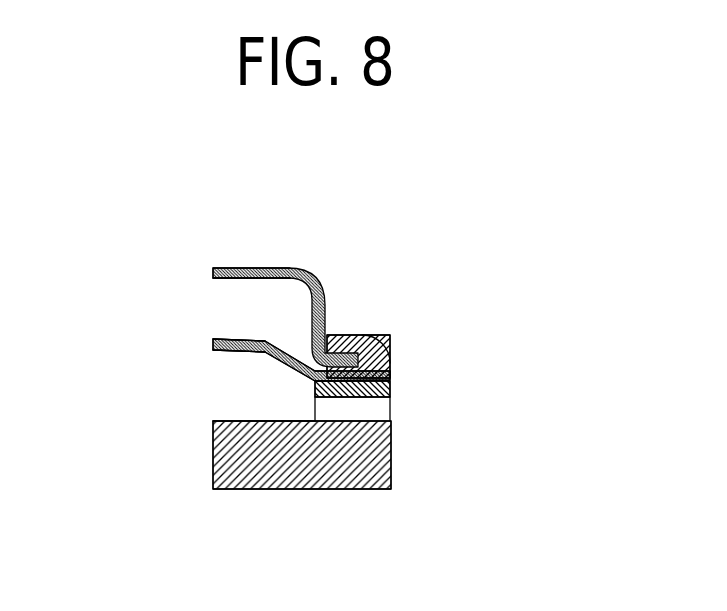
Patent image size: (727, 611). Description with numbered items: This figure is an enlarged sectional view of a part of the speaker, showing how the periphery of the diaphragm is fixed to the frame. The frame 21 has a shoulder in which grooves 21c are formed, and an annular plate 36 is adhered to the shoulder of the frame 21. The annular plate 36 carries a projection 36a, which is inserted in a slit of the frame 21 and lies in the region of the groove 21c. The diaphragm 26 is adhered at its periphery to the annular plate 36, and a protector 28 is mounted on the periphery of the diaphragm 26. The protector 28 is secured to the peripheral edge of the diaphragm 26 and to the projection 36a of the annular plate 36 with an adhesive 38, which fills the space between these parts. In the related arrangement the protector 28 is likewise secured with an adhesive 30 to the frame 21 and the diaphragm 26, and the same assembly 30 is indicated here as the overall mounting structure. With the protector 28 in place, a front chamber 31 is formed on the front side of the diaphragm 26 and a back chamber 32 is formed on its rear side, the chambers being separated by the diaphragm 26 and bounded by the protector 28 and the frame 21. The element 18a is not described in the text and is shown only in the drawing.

The frame 21 is at (350, 462).
The groove 21c is at (363, 408).
The diaphragm 26 is at (304, 270).
The protector 28 is at (250, 267).
The adhesive 30 is at (312, 319).
The front chamber 31 is at (230, 310).
The back chamber 32 is at (250, 388).
The annular plate 36 is at (318, 379).
The projection 36a is at (392, 388).
The adhesive 38 is at (412, 322).
The terminal portion 18a is at (390, 370).